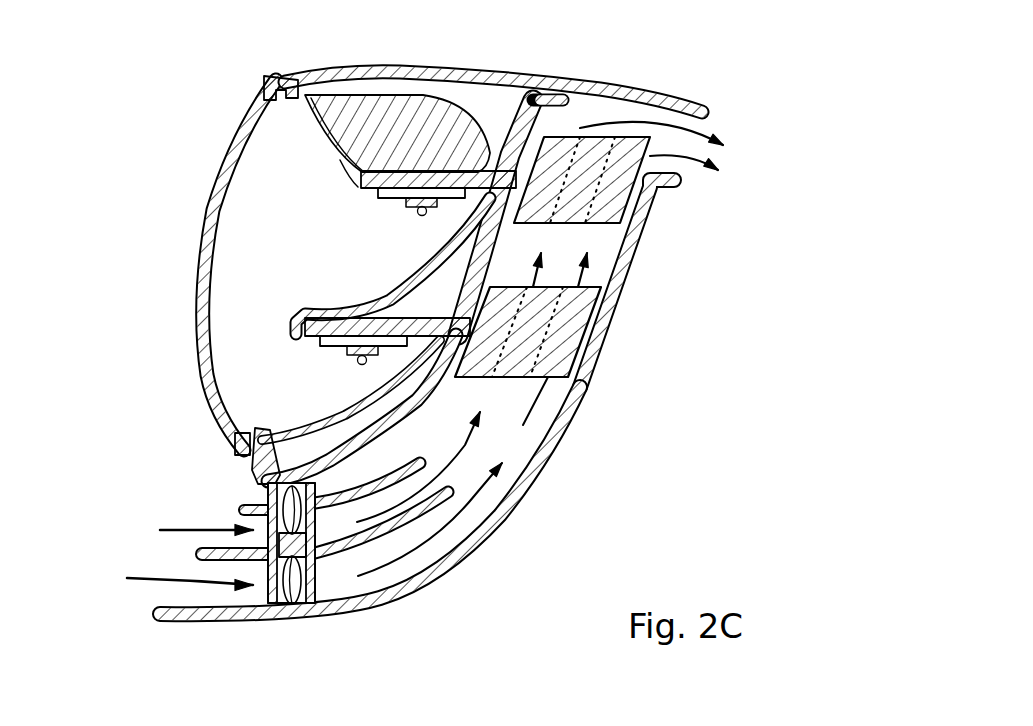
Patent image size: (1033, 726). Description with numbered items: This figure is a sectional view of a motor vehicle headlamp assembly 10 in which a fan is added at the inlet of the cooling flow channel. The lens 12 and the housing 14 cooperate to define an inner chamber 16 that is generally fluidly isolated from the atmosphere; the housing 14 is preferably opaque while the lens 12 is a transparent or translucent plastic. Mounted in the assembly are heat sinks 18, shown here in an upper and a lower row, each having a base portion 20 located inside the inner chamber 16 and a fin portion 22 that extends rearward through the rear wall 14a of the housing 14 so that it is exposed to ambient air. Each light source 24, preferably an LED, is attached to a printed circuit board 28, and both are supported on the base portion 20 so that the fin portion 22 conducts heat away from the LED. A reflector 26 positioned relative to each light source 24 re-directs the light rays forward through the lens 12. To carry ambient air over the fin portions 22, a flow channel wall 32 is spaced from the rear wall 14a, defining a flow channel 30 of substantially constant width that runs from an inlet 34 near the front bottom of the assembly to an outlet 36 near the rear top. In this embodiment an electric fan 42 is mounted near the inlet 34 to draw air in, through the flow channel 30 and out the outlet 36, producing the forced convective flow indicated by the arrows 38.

The headlamp assembly 10 is at (703, 493).
The lens 12 is at (225, 157).
The housing 14 is at (440, 75).
The rear wall 14a is at (623, 255).
The inner chamber 16 is at (284, 144).
The heat sink 18 is at (505, 152).
The base portion 20 is at (357, 189).
The fin portion 22 is at (607, 208).
The light source 24 is at (415, 212).
The reflector 26 is at (377, 295).
The printed circuit board 28 is at (398, 197).
The flow channel 30 is at (540, 412).
The flow channel wall 32 is at (483, 547).
The inlet 34 is at (186, 579).
The outlet 36 is at (677, 137).
The arrows 38 is at (667, 120).
The fan 42 is at (378, 542).